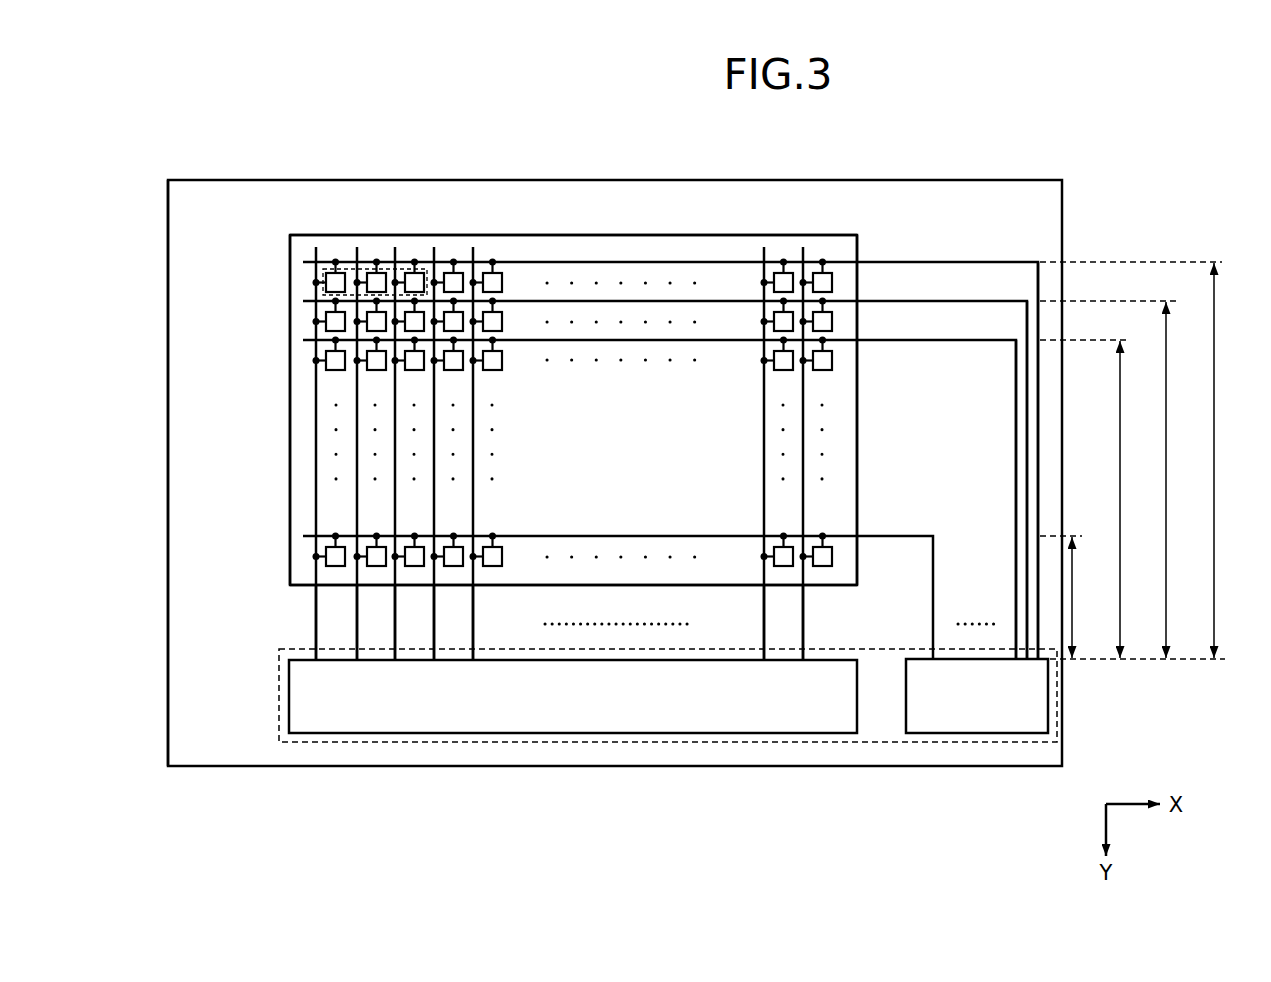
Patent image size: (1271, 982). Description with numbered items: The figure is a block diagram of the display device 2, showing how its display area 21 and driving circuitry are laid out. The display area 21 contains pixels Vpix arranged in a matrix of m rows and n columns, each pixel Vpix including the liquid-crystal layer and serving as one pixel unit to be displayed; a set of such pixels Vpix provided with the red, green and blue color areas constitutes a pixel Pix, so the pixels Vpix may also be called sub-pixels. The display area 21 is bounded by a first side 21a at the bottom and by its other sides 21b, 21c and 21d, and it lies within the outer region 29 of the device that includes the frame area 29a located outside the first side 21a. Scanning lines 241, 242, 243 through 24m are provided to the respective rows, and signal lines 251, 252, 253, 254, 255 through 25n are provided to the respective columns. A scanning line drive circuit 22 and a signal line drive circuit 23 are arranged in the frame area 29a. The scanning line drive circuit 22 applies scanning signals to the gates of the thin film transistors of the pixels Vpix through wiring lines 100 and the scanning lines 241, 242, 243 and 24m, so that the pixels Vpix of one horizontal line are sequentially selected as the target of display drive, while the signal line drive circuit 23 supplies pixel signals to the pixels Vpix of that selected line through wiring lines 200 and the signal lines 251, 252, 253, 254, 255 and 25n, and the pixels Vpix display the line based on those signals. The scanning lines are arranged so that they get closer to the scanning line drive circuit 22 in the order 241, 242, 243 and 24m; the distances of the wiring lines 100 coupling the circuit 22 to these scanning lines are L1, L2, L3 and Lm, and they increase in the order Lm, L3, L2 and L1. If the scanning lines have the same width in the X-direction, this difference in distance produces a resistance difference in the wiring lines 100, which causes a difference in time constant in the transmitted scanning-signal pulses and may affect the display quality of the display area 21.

The display device 2 is at (993, 157).
The substrate 29 is at (205, 462).
The frame area 29a is at (278, 697).
The display area 21 is at (325, 233).
The first side 21a is at (719, 591).
The right side of display area 21b is at (862, 423).
The upper side of display area 21c is at (596, 233).
The left side of display area 21d is at (287, 390).
The scanning line 241 is at (886, 261).
The scanning line 242 is at (1005, 300).
The scanning line 243 is at (944, 341).
The scanning line 24m is at (912, 533).
The signal line 251 is at (316, 517).
The signal line 252 is at (357, 440).
The signal line 253 is at (395, 403).
The signal line 254 is at (434, 406).
The signal line 255 is at (473, 500).
The signal line 25n is at (805, 622).
The wiring lines 100 is at (1044, 447).
The wiring lines 200 is at (296, 612).
The pixel Pix is at (401, 268).
The pixel Vpix is at (506, 364).
The signal line drive circuit 23 is at (858, 670).
The scanning line drive circuit 22 is at (1048, 718).
The distance L1 is at (1228, 460).
The distance L2 is at (1180, 480).
The distance L3 is at (1134, 499).
The distance Lm is at (1089, 597).